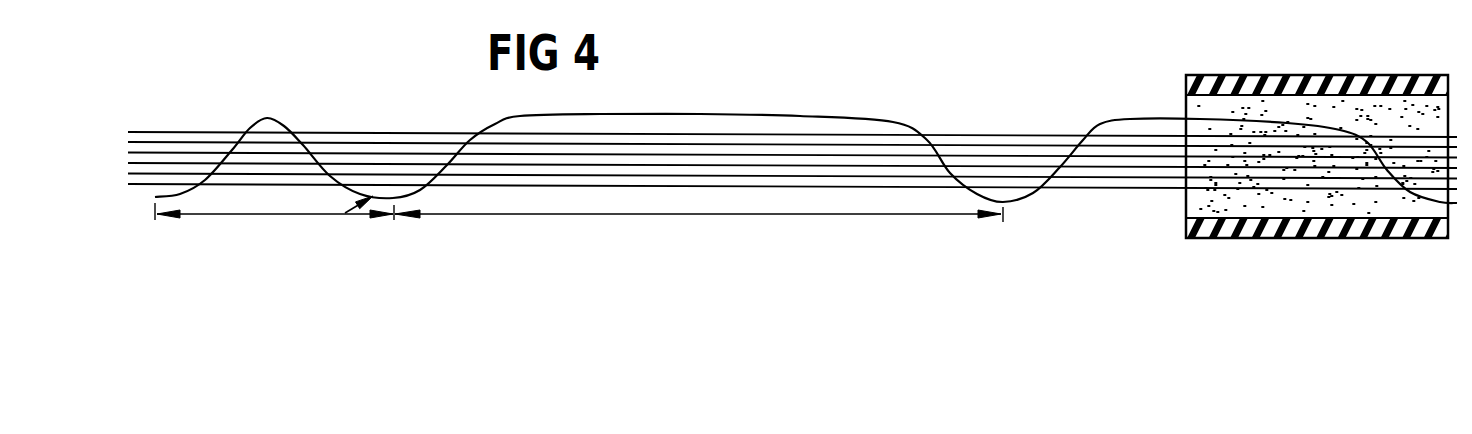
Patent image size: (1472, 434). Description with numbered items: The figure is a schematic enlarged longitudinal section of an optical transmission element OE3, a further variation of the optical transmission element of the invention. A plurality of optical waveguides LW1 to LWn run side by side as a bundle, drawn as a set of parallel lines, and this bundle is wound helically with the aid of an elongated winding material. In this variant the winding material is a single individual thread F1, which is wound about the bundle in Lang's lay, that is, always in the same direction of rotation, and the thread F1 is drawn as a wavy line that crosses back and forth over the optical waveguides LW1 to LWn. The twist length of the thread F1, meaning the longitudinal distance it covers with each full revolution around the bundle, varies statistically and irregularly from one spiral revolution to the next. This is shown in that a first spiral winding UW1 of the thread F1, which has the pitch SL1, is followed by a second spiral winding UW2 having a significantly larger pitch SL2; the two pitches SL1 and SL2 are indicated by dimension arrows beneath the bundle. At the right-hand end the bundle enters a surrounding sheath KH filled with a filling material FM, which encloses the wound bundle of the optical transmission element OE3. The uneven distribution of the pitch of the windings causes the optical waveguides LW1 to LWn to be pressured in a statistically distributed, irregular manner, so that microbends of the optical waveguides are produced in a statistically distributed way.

The spiral winding UW1 is at (273, 118).
The spiral winding UW2 is at (708, 115).
The optical waveguide LWn is at (387, 132).
The optical waveguide LW1 is at (227, 184).
The pitch SL1 is at (272, 217).
The pitch SL2 is at (687, 216).
The thread F1 is at (345, 213).
The cable sheath / jacket KH is at (1235, 82).
The filling material FM is at (1355, 110).
The optical transmission element OE3 is at (1290, 165).